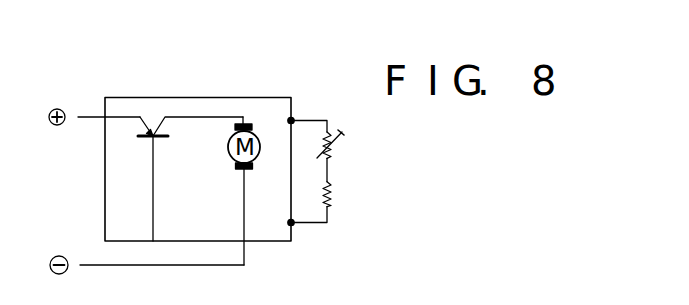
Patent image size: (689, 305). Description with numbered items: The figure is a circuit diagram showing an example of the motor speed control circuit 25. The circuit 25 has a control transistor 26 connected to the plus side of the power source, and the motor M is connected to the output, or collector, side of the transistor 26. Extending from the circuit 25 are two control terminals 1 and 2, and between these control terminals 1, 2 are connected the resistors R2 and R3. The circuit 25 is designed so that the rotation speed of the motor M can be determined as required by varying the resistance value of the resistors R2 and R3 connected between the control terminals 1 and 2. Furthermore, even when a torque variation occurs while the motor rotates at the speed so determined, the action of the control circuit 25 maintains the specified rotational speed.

The motor speed control circuit 25 is at (202, 101).
The control transistor 26 is at (167, 124).
The resistor R2 is at (333, 148).
The resistor R3 is at (333, 195).
The control terminal 1 is at (277, 122).
The control terminal 2 is at (277, 223).